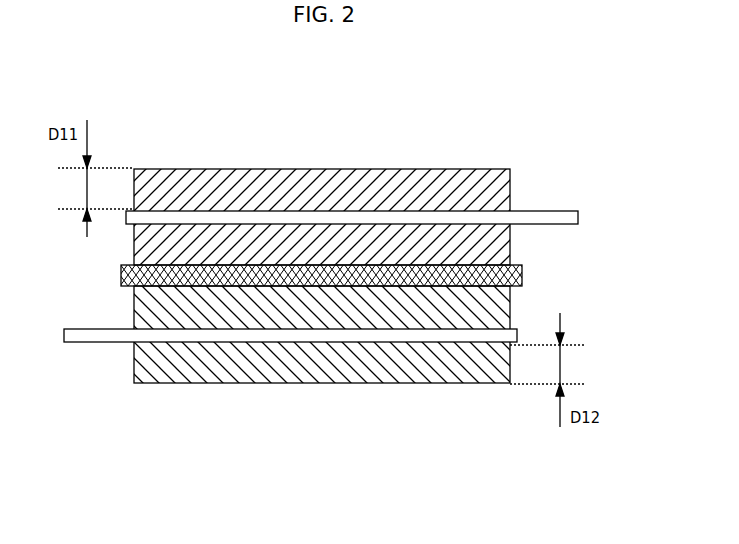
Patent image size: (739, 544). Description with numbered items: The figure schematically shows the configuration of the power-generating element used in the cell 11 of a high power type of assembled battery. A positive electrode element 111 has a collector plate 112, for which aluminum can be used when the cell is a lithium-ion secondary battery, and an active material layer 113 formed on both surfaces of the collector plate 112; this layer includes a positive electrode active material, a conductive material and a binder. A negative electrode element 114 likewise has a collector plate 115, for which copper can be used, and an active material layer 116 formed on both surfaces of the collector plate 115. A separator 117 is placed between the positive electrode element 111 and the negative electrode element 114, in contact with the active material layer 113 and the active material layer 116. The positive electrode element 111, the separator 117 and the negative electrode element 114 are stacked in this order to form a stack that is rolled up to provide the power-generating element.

The cell 11 is at (362, 284).
The positive electrode element 111 is at (352, 180).
The collector plate 112 is at (433, 135).
The active material layer 113 is at (460, 250).
The negative electrode element 114 is at (290, 379).
The collector plate 115 is at (220, 430).
The active material layer 116 is at (185, 303).
The separator 117 is at (522, 280).